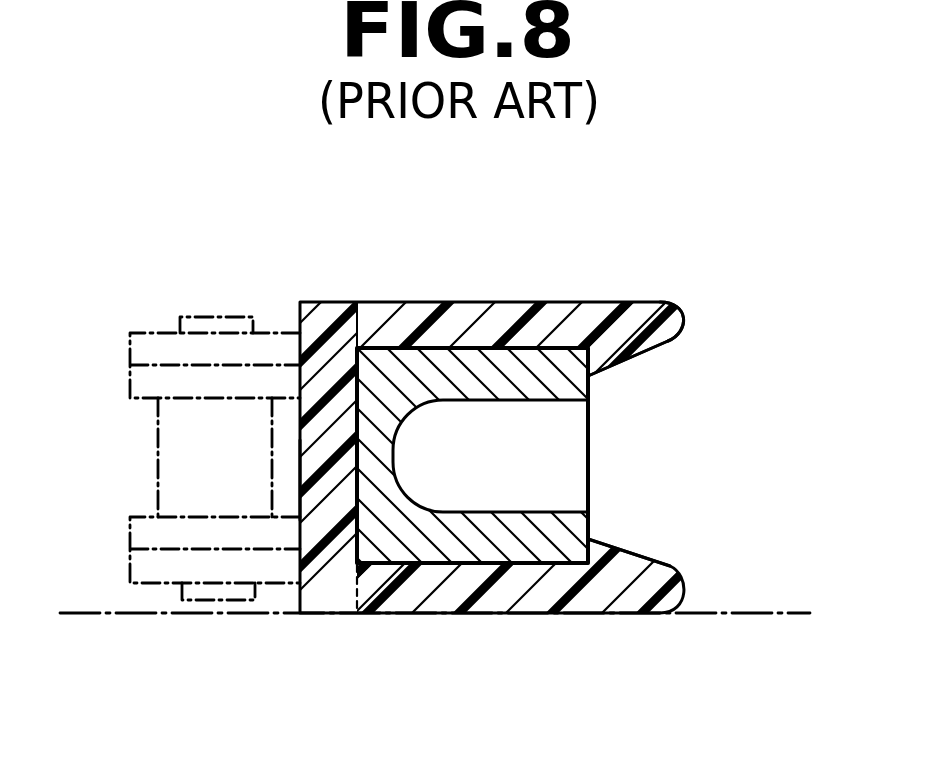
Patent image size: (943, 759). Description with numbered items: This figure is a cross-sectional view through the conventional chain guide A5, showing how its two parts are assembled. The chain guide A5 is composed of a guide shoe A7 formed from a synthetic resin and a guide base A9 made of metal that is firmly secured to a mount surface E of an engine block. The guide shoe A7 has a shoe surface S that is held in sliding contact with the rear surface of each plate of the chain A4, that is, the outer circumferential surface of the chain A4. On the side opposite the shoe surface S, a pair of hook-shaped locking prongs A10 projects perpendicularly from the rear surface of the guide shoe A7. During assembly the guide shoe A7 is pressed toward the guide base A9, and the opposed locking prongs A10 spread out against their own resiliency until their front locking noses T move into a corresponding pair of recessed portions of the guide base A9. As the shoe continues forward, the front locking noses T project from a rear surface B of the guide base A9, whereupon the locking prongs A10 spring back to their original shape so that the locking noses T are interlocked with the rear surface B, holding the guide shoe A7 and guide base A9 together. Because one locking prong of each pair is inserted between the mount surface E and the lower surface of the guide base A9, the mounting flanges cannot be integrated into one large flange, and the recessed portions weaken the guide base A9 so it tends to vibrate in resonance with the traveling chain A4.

The chain A4 is at (158, 328).
The conventional chain guide A5 is at (645, 618).
The guide shoe A7 is at (352, 622).
The guide base A9 is at (612, 463).
The locking prongs A10 is at (462, 302).
The rear surface of the guide base B is at (590, 372).
The front locking noses T is at (590, 352).
The shoe surface S is at (300, 483).
The mount surface E is at (783, 608).